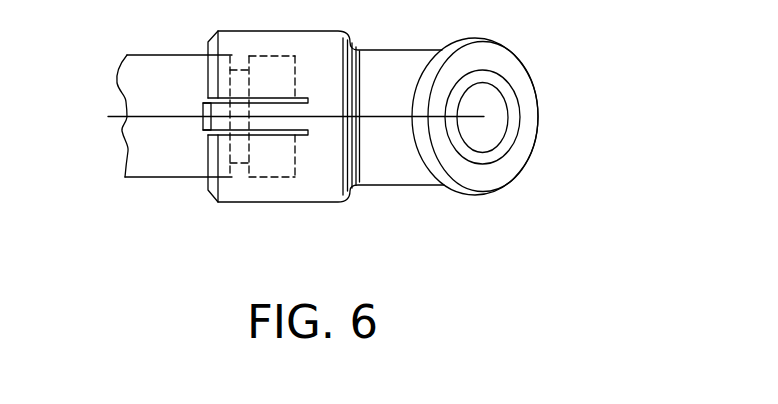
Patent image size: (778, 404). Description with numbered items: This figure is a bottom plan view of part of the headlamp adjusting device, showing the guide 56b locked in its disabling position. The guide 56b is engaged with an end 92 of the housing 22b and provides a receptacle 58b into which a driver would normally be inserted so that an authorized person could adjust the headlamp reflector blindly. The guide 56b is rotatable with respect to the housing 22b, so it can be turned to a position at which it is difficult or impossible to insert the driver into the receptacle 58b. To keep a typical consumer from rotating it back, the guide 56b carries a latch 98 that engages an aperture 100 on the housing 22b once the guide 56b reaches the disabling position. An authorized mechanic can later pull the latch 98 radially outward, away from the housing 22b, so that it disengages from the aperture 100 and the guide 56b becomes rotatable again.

The housing 22b is at (177, 160).
The guide 56b is at (460, 212).
The receptacle 58b is at (487, 113).
The end of the housing 92 is at (297, 153).
The latch 98 is at (267, 114).
The aperture 100 is at (202, 116).